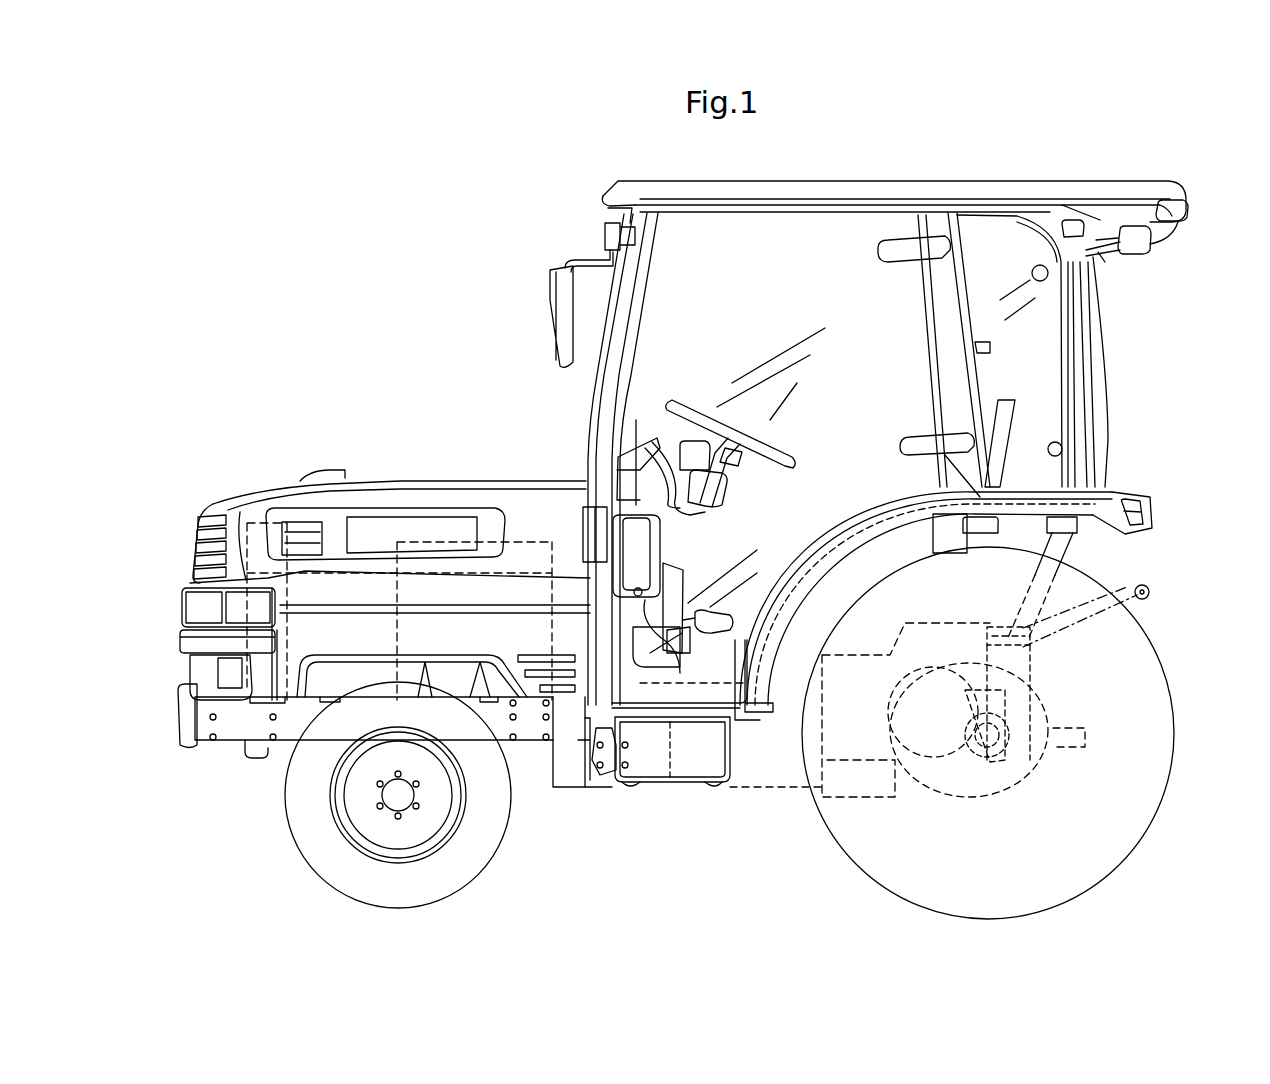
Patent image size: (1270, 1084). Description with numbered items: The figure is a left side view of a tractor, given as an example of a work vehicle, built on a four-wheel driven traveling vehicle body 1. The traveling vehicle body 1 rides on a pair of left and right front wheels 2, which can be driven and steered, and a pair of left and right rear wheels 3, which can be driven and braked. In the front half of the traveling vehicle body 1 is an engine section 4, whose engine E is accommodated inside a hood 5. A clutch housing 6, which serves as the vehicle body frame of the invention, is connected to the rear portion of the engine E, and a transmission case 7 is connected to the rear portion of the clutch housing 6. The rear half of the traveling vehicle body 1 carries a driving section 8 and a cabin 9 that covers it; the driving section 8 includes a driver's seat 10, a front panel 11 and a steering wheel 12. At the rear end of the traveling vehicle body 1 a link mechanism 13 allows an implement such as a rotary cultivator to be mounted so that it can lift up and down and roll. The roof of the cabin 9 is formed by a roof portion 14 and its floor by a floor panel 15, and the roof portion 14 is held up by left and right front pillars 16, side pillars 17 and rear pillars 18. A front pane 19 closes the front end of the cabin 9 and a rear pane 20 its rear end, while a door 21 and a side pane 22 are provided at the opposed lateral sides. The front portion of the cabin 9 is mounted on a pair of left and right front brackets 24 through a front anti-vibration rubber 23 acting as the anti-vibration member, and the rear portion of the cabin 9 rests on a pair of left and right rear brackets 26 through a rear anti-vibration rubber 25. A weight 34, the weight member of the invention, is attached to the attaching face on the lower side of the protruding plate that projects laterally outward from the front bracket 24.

The traveling vehicle body 1 is at (217, 757).
The front wheels 2 is at (318, 864).
The rear wheels 3 is at (1110, 855).
The engine section 4 is at (357, 483).
The hood 5 is at (456, 487).
The engine E is at (420, 520).
The clutch housing 6 is at (602, 778).
The transmission case 7 is at (862, 803).
The driving section 8 is at (805, 262).
The cabin 9 is at (688, 178).
The driver's seat 10 is at (1010, 422).
The front panel 11 is at (640, 442).
The steering wheel 12 is at (785, 445).
The link mechanism 13 is at (1145, 584).
The roof portion 14 is at (970, 185).
The floor panel 15 is at (710, 715).
The front pillars 16 is at (598, 452).
The side pillars 17 is at (935, 350).
The rear pillars 18 is at (1062, 352).
The front pane 19 is at (610, 297).
The rear pane 20 is at (1102, 395).
The door 21 is at (612, 418).
The side pane 22 is at (838, 545).
The front anti-vibration rubber 23 is at (630, 723).
The front brackets 24 is at (640, 745).
The rear anti-vibration rubber 25 is at (975, 632).
The rear brackets 26 is at (1040, 667).
The weight 34 is at (608, 753).